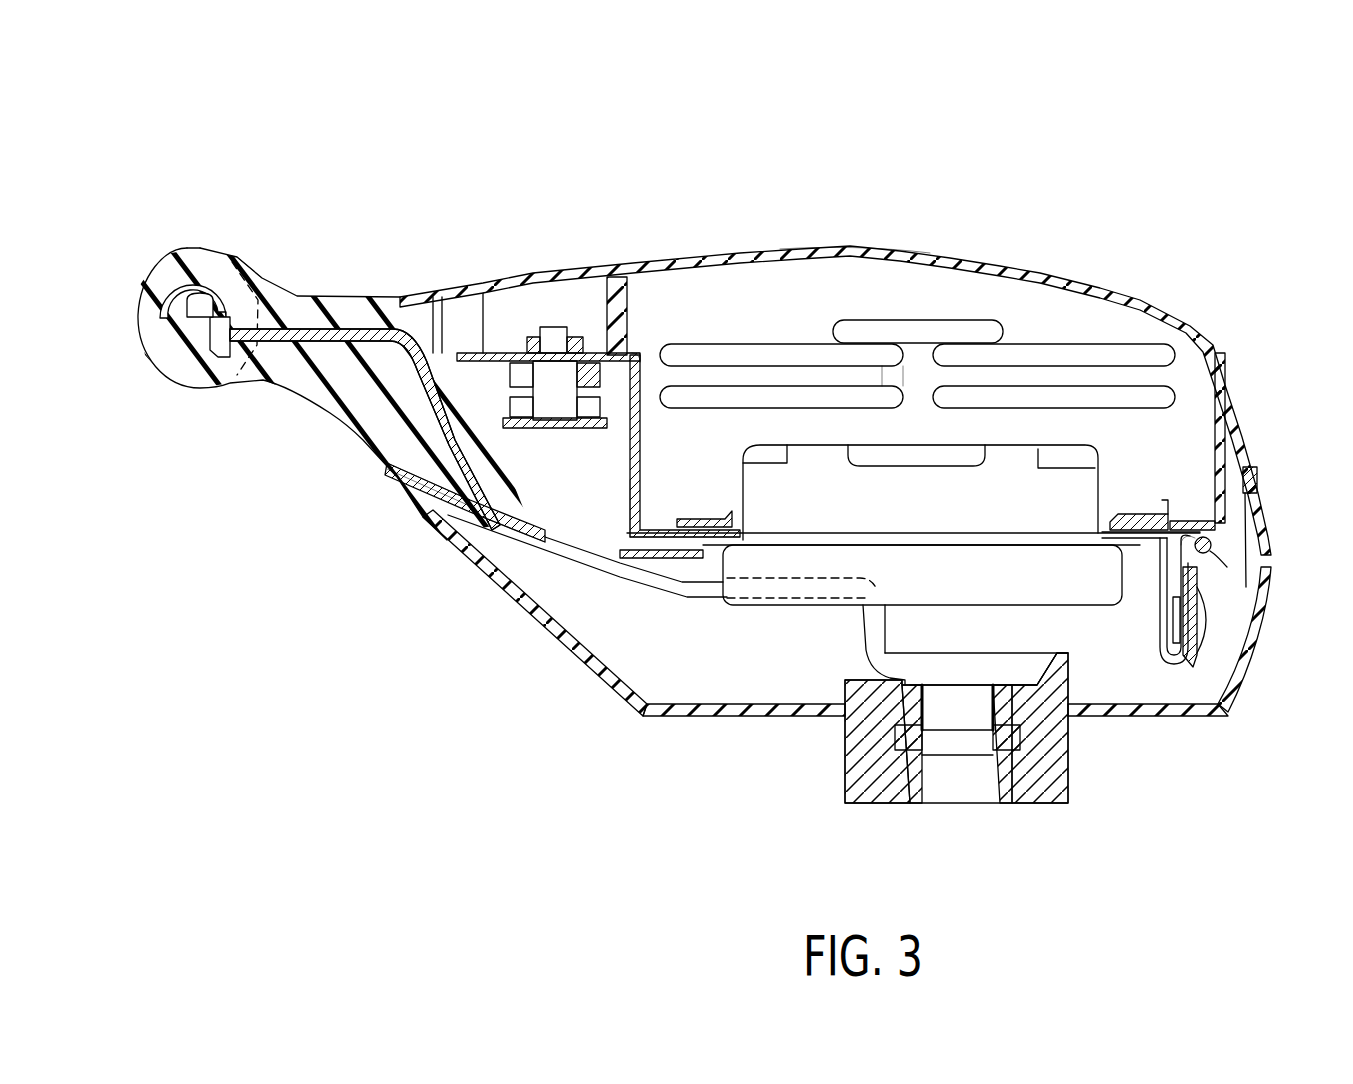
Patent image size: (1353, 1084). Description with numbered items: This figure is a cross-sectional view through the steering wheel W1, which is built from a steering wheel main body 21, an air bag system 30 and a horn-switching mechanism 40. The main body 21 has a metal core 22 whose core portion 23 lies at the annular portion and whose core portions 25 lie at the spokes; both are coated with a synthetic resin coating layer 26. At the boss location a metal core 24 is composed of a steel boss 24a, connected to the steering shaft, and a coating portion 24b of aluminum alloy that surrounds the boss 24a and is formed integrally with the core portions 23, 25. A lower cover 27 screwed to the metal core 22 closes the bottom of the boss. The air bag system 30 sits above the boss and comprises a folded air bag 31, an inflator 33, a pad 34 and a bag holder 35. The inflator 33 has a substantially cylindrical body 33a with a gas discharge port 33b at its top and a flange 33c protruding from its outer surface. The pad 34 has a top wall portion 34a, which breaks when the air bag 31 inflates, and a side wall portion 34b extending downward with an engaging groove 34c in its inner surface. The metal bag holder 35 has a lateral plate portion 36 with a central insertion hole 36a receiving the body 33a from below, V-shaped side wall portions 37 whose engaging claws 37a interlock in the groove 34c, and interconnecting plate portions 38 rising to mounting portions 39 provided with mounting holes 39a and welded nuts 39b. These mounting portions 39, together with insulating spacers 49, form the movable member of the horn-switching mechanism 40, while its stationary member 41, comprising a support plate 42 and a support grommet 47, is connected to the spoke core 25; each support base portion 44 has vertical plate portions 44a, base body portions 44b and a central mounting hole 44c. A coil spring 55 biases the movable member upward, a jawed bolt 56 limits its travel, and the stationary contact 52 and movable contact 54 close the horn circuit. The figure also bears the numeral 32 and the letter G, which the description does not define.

The steering wheel W1 is at (1160, 152).
The steering wheel main body 21 is at (685, 762).
The metal core 22 is at (135, 448).
The core portion 23 is at (170, 318).
The metal core 24 is at (810, 862).
The boss 24a is at (914, 797).
The coating portion 24b is at (877, 795).
The core portion 25 is at (260, 375).
The coating layer 26 is at (260, 276).
The lower cover 27 is at (616, 700).
The air bag system 30 is at (1084, 622).
The air bag 31 is at (906, 321).
The contact plate 32 is at (1146, 520).
The inflator 33 is at (1005, 612).
The body 33a is at (828, 452).
The gas discharge port 33b is at (937, 456).
The flange 33c is at (1003, 543).
The pad 34 is at (1112, 285).
The top wall portion 34a is at (824, 248).
The side wall portion 34b is at (605, 292).
The engaging groove 34c is at (1212, 546).
The bag holder 35 is at (652, 480).
The lateral plate portion 36 is at (640, 527).
The insertion hole 36a is at (740, 530).
The side wall portion 37 is at (1165, 568).
The engaging claw 37a is at (1186, 540).
The interconnecting plate portion 38 is at (642, 392).
The mounting portion 39 is at (444, 345).
The mounting hole 39a is at (563, 340).
The nut 39b is at (500, 342).
The horn-switching mechanism 40 is at (466, 378).
The stationary member 41 is at (628, 580).
The support plate 42 is at (653, 560).
The support base portion 44 is at (345, 622).
The vertical plate portion 44a is at (510, 596).
The base body portion 44b is at (437, 512).
The mounting hole 44c is at (455, 520).
The support grommet 47 is at (573, 422).
The insulating spacer 49 is at (588, 363).
The stationary contact 52 is at (642, 355).
The movable contact 54 is at (633, 358).
The coil spring 55 is at (505, 352).
The jawed bolt 56 is at (547, 330).
The heater pattern G is at (896, 396).